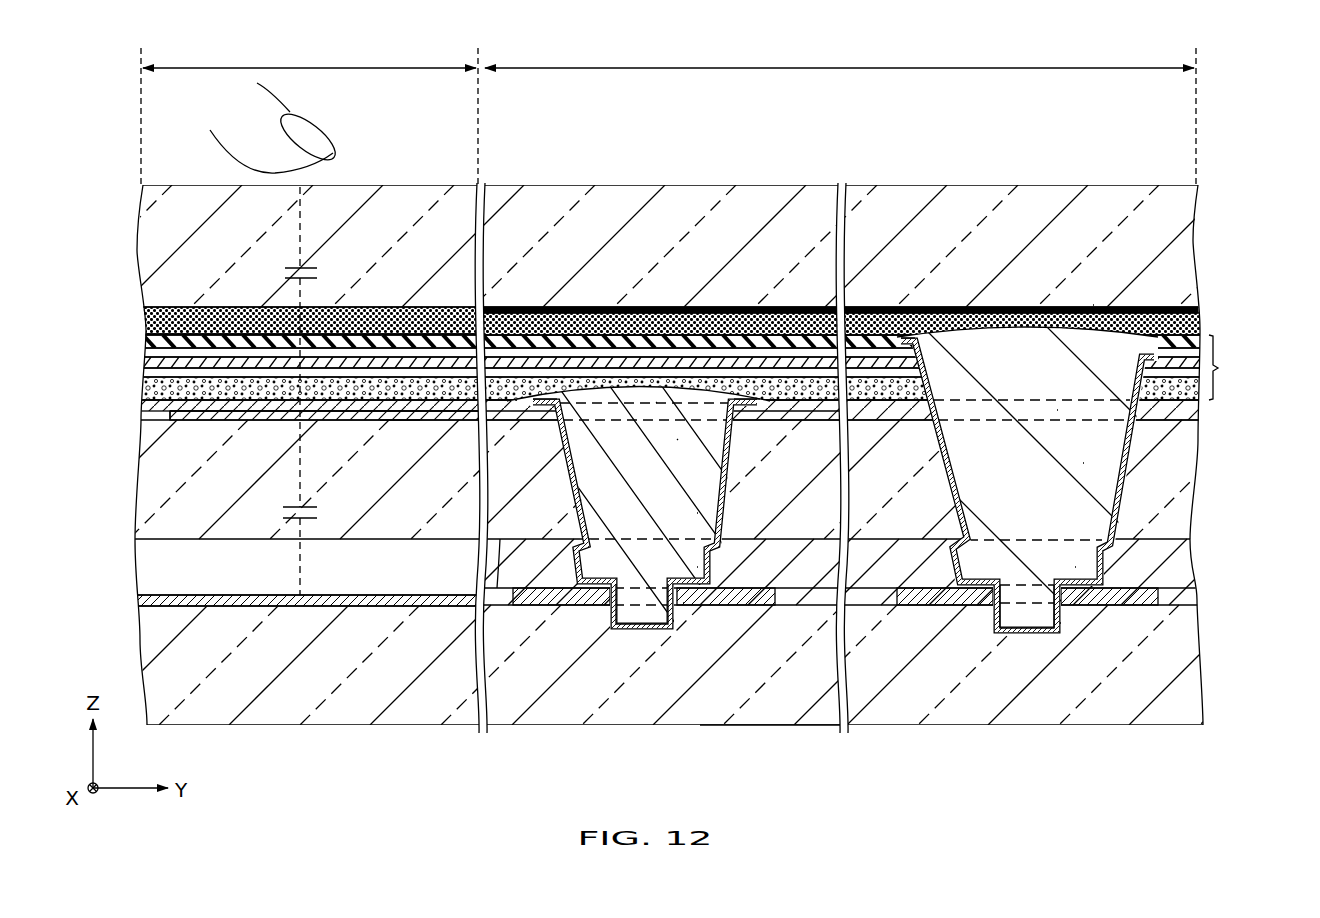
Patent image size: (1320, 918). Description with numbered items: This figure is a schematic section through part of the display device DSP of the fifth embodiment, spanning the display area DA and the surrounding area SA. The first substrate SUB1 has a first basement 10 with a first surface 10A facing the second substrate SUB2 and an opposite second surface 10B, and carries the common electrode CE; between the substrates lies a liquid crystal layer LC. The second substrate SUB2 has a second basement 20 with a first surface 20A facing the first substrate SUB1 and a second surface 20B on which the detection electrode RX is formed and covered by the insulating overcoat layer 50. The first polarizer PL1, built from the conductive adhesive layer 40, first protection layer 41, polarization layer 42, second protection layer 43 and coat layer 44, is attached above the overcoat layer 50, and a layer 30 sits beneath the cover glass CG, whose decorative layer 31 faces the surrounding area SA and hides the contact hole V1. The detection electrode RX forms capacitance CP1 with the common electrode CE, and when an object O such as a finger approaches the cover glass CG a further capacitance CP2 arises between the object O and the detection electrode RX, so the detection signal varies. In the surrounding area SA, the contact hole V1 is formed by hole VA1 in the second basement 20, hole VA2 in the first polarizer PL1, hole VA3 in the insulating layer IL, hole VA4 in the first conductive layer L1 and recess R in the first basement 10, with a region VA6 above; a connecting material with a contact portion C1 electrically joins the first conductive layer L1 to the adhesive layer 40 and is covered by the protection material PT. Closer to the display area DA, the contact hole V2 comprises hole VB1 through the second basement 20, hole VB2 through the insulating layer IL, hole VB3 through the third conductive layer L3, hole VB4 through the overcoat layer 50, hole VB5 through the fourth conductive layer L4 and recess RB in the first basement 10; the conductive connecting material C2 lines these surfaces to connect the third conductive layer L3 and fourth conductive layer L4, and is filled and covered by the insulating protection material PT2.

The display device DSP is at (1214, 187).
The cover glass CG is at (153, 257).
The display area DA is at (309, 115).
The surrounding area SA is at (840, 115).
The object O is at (283, 102).
The capacitance CP2 is at (318, 272).
The capacitance CP1 is at (318, 511).
The coat layer 44 is at (153, 336).
The second protection layer 43 is at (157, 352).
The polarization layer 42 is at (157, 362).
The first protection layer 41 is at (147, 375).
The adhesive layer 40 is at (143, 393).
The overcoat layer 50 is at (160, 413).
The decorative layer 31 is at (1172, 306).
The adhesive layer 30 is at (1194, 323).
The first polarizer PL1 is at (1235, 367).
The second surface 20B is at (1200, 403).
The second substrate SUB2 is at (125, 492).
The second basement 20 is at (1182, 482).
The liquid crystal layer LC is at (150, 567).
The common electrode CE is at (387, 597).
The first surface 20A is at (1181, 546).
The first surface 10A is at (1181, 598).
The first substrate SUB1 is at (125, 650).
The first basement 10 is at (1188, 673).
The second surface 10B is at (767, 728).
The detection electrode RX is at (397, 421).
The contact hole V2 is at (608, 437).
The protection material PT2 is at (600, 488).
The connecting material C2 is at (558, 442).
The third conductive layer L3 is at (555, 603).
The fourth conductive layer L4 is at (775, 422).
The recess RB is at (630, 630).
The hole VB1 is at (697, 513).
The hole VB2 is at (697, 567).
The hole VB3 is at (683, 603).
The hole VB4 is at (657, 405).
The hole VB5 is at (678, 440).
The contact hole V1 is at (1007, 383).
The protection material PT is at (983, 482).
The first contact portion C1 is at (940, 443).
The recess R is at (1015, 636).
The first conductive layer L1 is at (905, 608).
The hole VA1 is at (1083, 463).
The hole VA2 is at (1093, 306).
The hole VA3 is at (1075, 567).
The hole VA4 is at (1060, 623).
The hole portion VA6 is at (1057, 410).
The insulating layer IL is at (497, 590).